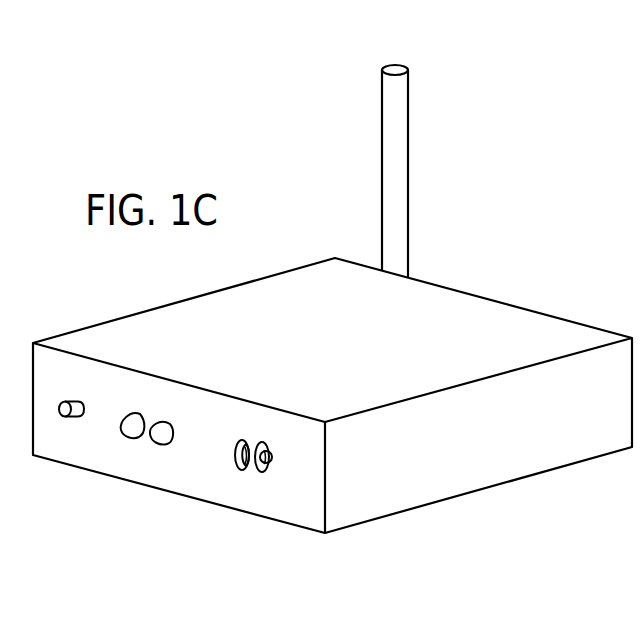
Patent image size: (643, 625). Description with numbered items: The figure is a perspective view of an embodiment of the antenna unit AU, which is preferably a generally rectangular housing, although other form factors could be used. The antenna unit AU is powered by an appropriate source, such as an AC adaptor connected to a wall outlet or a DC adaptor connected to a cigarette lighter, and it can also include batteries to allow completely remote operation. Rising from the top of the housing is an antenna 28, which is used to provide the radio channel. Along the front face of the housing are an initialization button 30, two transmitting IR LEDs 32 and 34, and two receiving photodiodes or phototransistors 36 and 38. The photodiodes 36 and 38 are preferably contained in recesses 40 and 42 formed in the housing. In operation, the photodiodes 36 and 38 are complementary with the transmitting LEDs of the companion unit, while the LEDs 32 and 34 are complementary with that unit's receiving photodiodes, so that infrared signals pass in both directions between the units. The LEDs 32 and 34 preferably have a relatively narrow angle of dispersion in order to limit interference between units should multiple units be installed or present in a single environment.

The antenna unit AU is at (592, 296).
The antenna 28 is at (408, 186).
The initialization button 30 is at (74, 417).
The transmitting IR LED 32 is at (129, 439).
The transmitting IR LED 34 is at (160, 445).
The receiving photodiode 36 is at (237, 468).
The receiving photodiode 38 is at (265, 471).
The recess 40 is at (241, 441).
The recess 42 is at (263, 441).